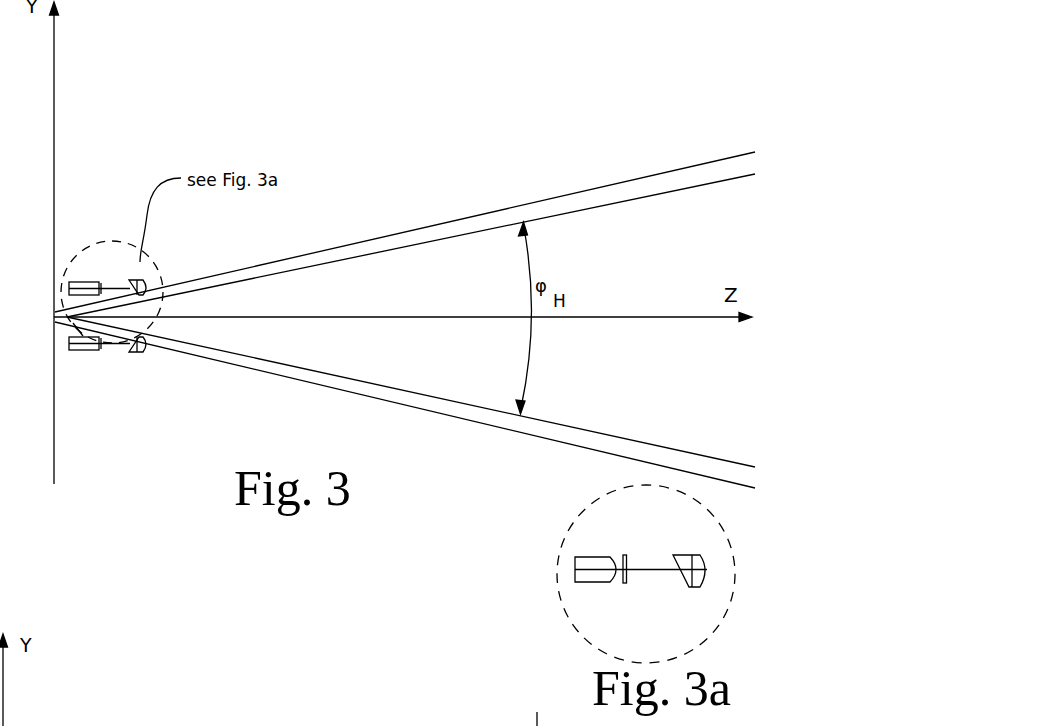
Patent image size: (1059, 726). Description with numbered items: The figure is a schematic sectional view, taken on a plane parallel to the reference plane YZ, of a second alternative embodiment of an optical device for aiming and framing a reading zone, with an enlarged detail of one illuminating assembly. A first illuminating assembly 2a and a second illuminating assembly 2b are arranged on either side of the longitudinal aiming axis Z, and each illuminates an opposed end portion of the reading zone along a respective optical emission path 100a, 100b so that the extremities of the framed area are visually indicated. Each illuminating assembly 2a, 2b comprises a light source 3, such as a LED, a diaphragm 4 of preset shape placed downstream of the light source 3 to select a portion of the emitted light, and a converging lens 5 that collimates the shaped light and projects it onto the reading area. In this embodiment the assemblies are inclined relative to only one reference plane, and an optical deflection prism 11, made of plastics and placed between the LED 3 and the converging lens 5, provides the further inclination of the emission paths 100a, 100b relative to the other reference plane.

In FIG. 3, the first illuminating assembly 2a is at (90, 226).
In FIG. 3, the second illuminating assembly 2b is at (124, 418).
In FIG. 3, the light source 3 is at (80, 282).
In FIG. 3A, the light source 3 is at (593, 557).
In FIG. 3, the diaphragm 4 is at (101, 282).
In FIG. 3A, the diaphragm 4 is at (630, 554).
In FIG. 3, the converging lens 5 is at (149, 283).
In FIG. 3A, the converging lens 5 is at (707, 560).
In FIG. 3, the optical prism 11 is at (138, 280).
In FIG. 3A, the optical prism 11 is at (680, 569).
In FIG. 3, the optical emission path 100a is at (468, 214).
In FIG. 3, the optical emission path 100b is at (427, 410).